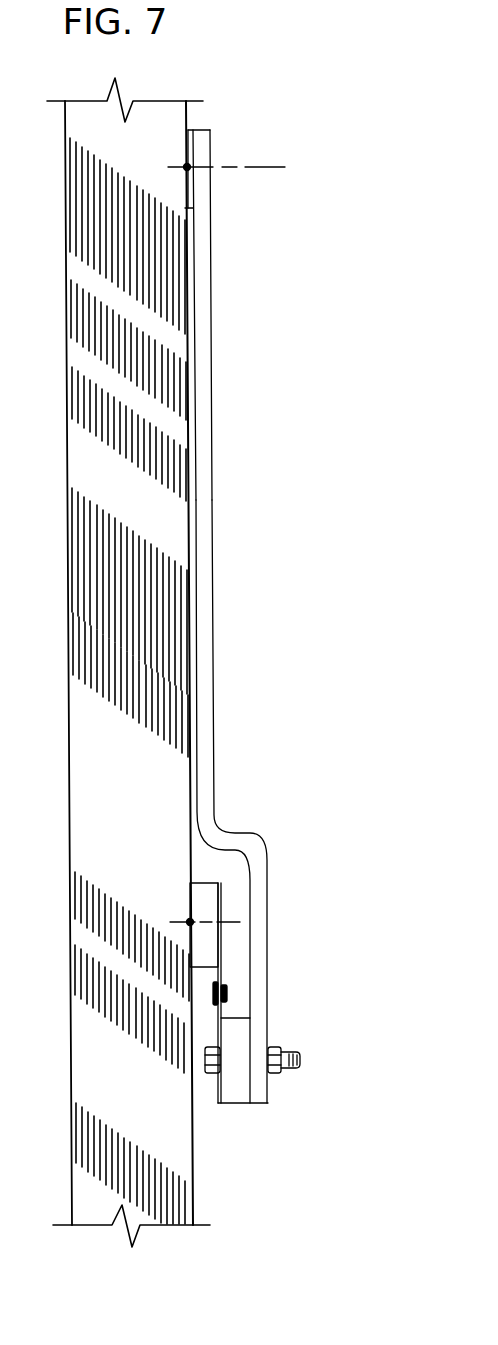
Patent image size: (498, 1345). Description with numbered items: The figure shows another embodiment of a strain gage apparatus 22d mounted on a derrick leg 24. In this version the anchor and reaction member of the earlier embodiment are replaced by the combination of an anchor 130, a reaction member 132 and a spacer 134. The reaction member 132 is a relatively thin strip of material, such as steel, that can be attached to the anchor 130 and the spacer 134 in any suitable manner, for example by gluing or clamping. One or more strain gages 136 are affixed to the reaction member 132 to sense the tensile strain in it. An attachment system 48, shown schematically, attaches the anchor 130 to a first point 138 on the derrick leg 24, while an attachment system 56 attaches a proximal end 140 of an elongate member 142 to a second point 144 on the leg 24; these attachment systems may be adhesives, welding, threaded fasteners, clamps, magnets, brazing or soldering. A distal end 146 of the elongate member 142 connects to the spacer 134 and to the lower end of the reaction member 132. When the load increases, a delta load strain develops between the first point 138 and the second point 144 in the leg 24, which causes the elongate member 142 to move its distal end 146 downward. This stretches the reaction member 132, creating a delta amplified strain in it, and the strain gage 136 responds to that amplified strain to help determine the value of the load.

The strain gage apparatus 22d is at (276, 374).
The derrick leg 24 is at (187, 468).
The attachment system 48 is at (232, 923).
The attachment system 56 is at (262, 172).
The anchor 130 is at (205, 880).
The reaction member 132 is at (223, 972).
The spacer 134 is at (238, 1103).
The strain gage 136 is at (222, 992).
The first point 138 is at (190, 922).
The proximal end 140 is at (210, 148).
The elongate member 142 is at (213, 641).
The second point 144 is at (187, 167).
The distal end 146 is at (270, 1088).